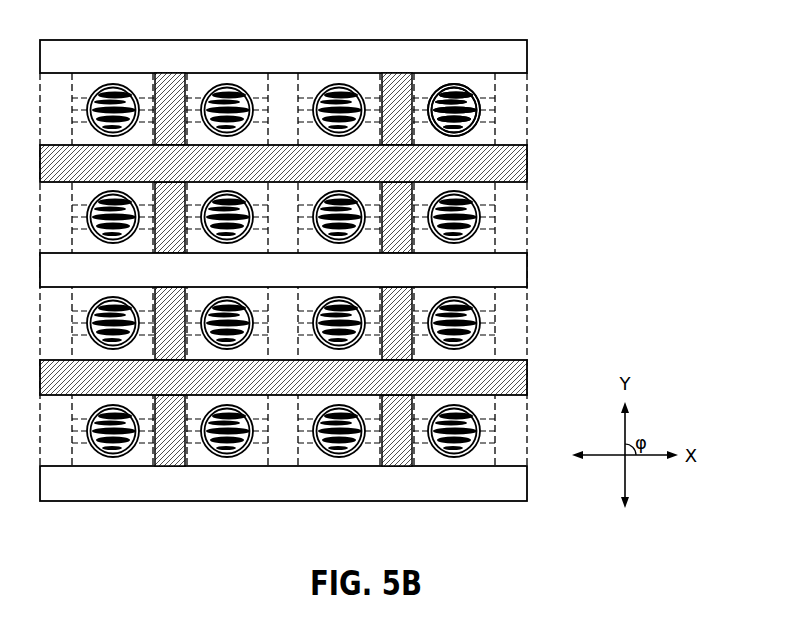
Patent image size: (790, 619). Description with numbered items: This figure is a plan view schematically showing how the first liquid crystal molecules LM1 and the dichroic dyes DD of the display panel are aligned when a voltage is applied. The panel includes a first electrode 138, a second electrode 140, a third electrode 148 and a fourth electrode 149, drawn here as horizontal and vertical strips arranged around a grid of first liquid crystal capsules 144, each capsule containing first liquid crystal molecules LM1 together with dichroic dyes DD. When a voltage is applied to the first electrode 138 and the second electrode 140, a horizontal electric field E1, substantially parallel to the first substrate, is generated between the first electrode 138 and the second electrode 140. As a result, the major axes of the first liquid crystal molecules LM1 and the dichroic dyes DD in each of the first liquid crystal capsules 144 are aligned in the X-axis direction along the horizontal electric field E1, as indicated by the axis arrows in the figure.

The first liquid crystal molecules LM1 is at (478, 95).
The dichroic dyes DD is at (480, 110).
The first liquid crystal capsules 144 is at (615, 90).
The first electrode 138 is at (513, 198).
The second electrode 140 is at (400, 238).
The third electrode 148 is at (513, 272).
The fourth electrode 149 is at (520, 372).
The horizontal electric field E1 is at (113, 116).